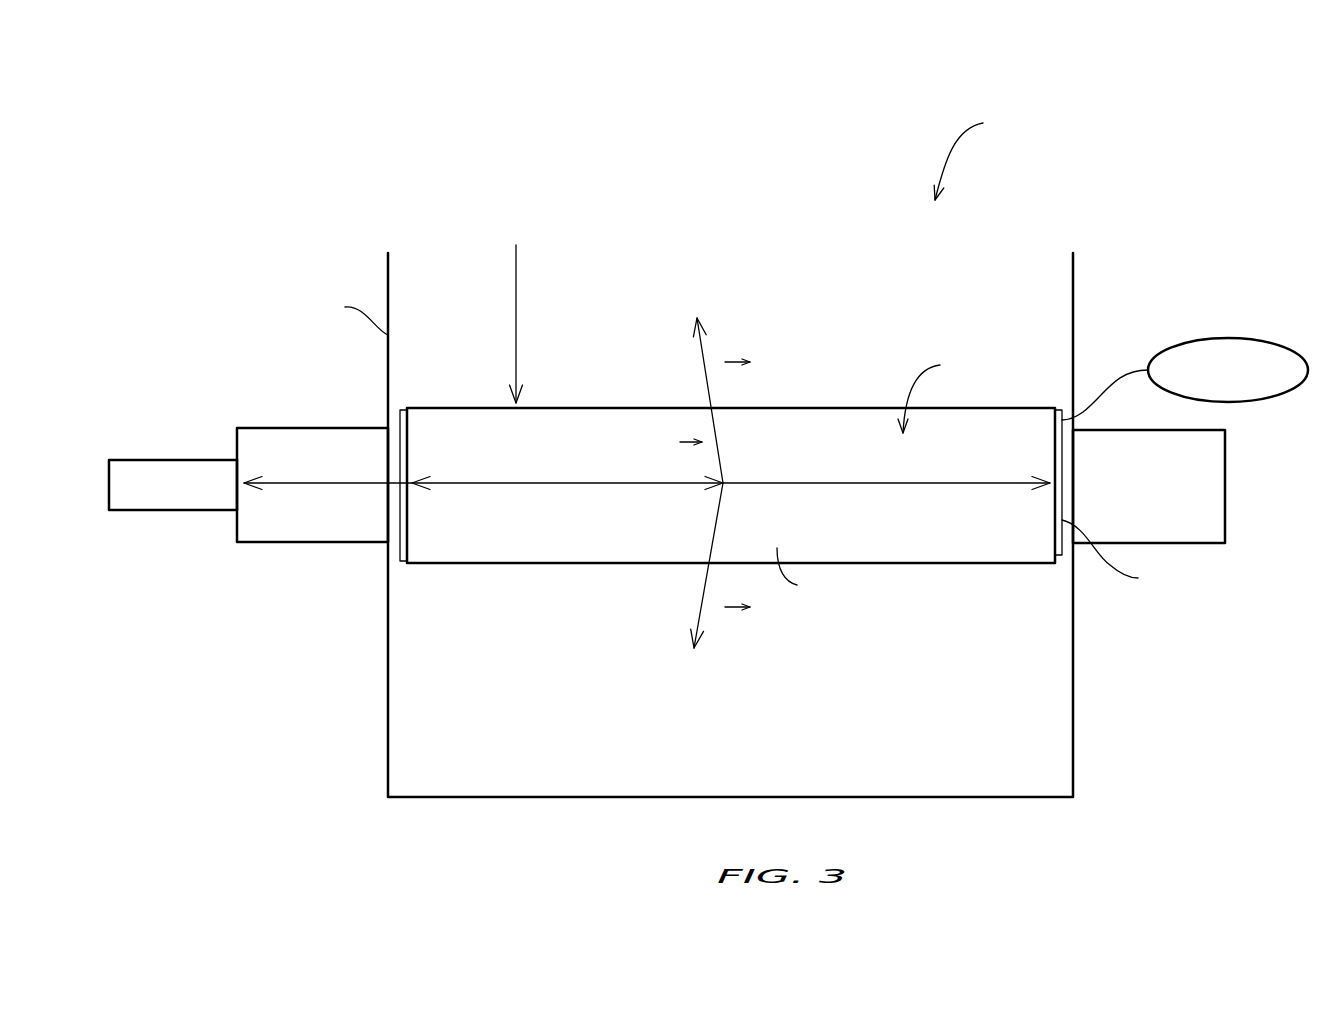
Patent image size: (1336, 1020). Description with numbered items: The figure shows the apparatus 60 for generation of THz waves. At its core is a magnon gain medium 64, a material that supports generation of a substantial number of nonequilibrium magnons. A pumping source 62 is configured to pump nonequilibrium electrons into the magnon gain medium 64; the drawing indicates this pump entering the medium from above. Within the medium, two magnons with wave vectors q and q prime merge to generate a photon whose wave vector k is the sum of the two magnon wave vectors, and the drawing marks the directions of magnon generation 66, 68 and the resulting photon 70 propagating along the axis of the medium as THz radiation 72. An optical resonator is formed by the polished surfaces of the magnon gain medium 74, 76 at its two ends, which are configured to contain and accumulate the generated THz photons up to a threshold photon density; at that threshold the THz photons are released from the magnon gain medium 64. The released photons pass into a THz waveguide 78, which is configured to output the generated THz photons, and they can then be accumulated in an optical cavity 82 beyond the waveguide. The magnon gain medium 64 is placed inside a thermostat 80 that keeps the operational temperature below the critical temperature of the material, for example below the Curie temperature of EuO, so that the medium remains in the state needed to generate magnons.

The apparatus 60 is at (345, 157).
The pumping source 62 is at (516, 305).
The magnon gain medium 64 is at (790, 425).
The direction of magnon generation q 66 is at (697, 350).
The direction of magnon generation q' 68 is at (695, 620).
The photon 70 is at (705, 490).
The THz photon radiation 72 is at (560, 483).
The polished surface of magnon gain medium 74 is at (398, 558).
The polished surface of magnon gain medium 76 is at (1062, 557).
The THz waveguide 78 is at (311, 524).
The thermostat 80 is at (388, 355).
The optical cavity 82 is at (173, 485).